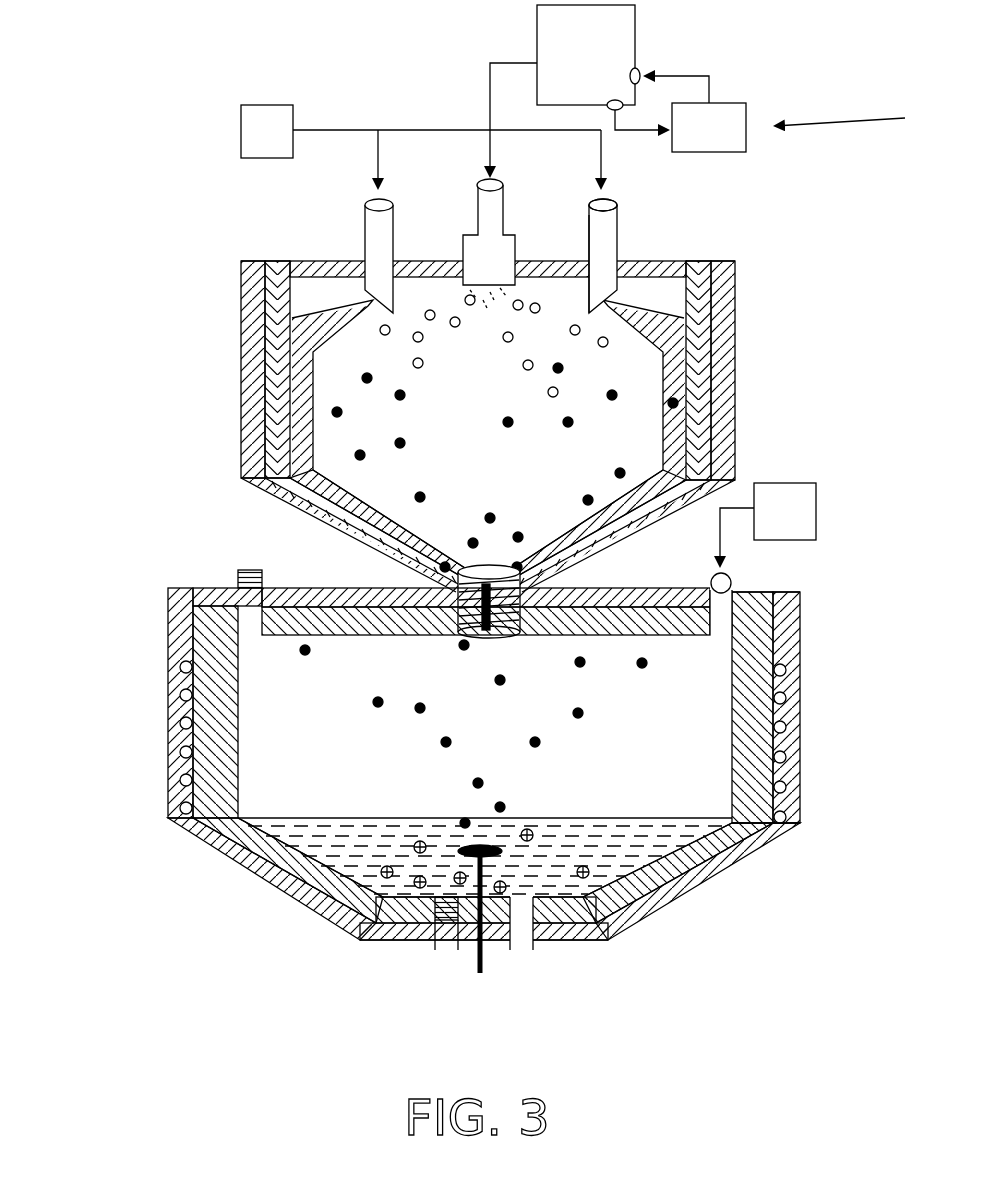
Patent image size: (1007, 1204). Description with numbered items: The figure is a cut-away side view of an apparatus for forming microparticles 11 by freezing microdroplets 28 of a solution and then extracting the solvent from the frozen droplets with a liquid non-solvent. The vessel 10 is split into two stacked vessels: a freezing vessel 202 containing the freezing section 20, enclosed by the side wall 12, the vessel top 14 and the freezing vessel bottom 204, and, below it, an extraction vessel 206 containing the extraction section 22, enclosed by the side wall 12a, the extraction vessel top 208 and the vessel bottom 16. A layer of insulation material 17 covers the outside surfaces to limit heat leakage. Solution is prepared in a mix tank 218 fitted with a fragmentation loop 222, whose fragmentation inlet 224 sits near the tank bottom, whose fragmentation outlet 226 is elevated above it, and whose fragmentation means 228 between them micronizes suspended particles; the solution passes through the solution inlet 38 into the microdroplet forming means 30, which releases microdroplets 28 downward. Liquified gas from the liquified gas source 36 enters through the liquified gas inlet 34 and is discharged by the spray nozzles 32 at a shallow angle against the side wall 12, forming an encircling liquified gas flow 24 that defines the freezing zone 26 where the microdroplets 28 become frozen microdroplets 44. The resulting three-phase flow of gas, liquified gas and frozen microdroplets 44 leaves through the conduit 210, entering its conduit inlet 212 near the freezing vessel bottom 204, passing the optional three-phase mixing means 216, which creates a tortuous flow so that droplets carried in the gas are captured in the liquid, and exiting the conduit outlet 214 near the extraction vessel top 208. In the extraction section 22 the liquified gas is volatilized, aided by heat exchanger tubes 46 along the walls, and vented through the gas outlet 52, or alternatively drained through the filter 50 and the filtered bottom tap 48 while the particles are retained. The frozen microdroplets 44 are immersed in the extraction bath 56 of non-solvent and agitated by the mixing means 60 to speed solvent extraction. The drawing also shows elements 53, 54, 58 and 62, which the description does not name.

The vessel 10 is at (262, 359).
The microparticles 11 is at (380, 874).
The side wall 12 is at (270, 377).
The side wall 12a is at (213, 688).
The vessel top 14 is at (683, 262).
The vessel bottom 16 is at (593, 942).
The insulation material 17 is at (736, 263).
The freezing section 20 is at (373, 350).
The extraction section 22 is at (358, 775).
The liquified gas flow 24 is at (670, 340).
The freezing zone 26 is at (498, 428).
The microdroplets 28 is at (368, 300).
The microdroplet forming means 30 is at (490, 252).
The spray nozzles 32 is at (603, 252).
The liquified gas inlet 34 is at (612, 210).
The liquified gas source 36 is at (251, 145).
The solution inlet 38 is at (490, 183).
The frozen microdroplets 44 is at (613, 390).
The heat exchanger tubes 46 is at (182, 748).
The filtered bottom tap 48 is at (447, 935).
The filter 50 is at (430, 917).
The gas outlet 52 is at (256, 610).
The threaded port 53 is at (240, 574).
The inlet 54 is at (732, 582).
The extraction bath 56 is at (633, 847).
The liquid supply 58 is at (770, 525).
The mixing means 60 is at (479, 988).
The outlet tube 62 is at (518, 940).
The freezing vessel 202 is at (716, 303).
The freezing vessel bottom 204 is at (350, 515).
The extraction vessel 206 is at (779, 712).
The extraction vessel top 208 is at (290, 637).
The conduit 210 is at (526, 586).
The conduit inlet 212 is at (489, 566).
The conduit outlet 214 is at (500, 636).
The three-phase mixing means 216 is at (452, 587).
The mix tank 218 is at (566, 66).
The fragmentation loop 222 is at (840, 120).
The fragmentation inlet 224 is at (618, 112).
The fragmentation outlet 226 is at (640, 70).
The fragmentation means 228 is at (686, 143).